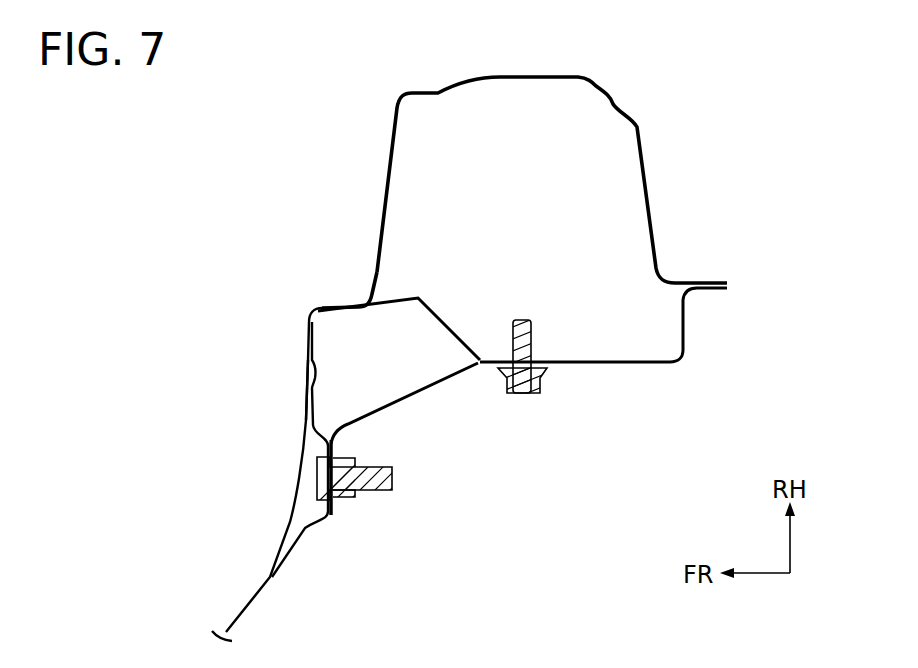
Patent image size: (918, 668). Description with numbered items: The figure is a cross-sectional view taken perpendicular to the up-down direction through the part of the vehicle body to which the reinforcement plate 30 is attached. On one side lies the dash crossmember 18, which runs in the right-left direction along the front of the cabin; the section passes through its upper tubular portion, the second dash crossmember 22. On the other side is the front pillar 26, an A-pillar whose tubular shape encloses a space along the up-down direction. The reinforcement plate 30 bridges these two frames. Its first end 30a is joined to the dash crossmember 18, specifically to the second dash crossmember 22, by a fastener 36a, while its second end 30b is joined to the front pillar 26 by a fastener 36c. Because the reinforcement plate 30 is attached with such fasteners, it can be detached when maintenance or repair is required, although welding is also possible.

The dash crossmember 18 is at (305, 397).
The second dash crossmember 22 is at (307, 390).
The front pillar 26 is at (425, 158).
The reinforcement plate 30 is at (424, 392).
The first end 30a is at (331, 503).
The second end 30b is at (548, 368).
The fastener 36a is at (318, 470).
The fastener 36c is at (523, 333).